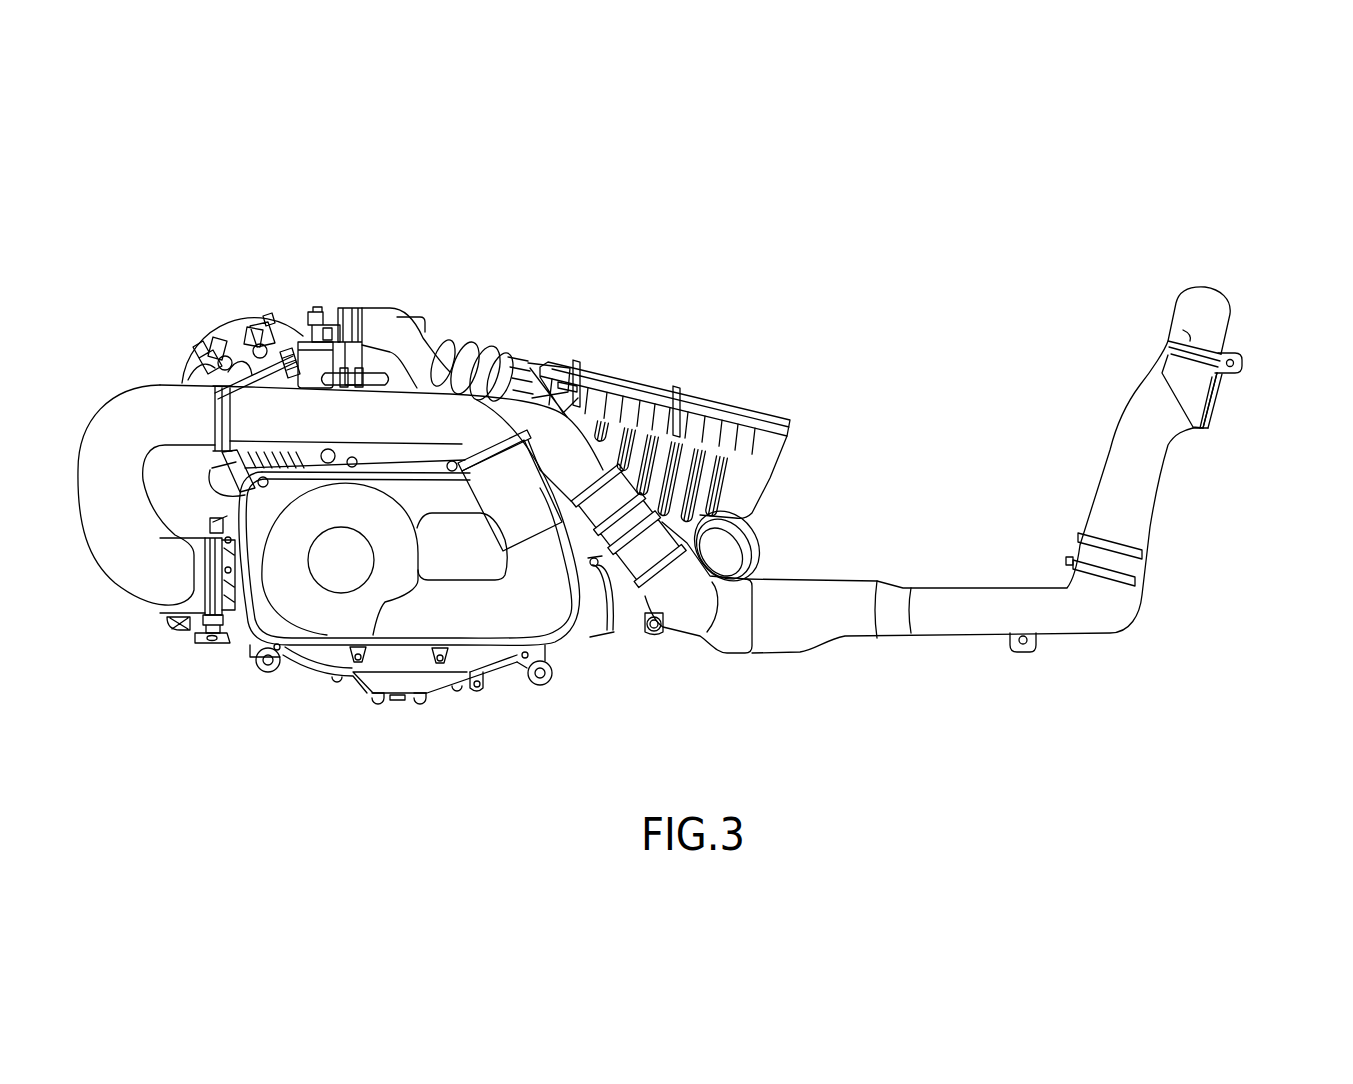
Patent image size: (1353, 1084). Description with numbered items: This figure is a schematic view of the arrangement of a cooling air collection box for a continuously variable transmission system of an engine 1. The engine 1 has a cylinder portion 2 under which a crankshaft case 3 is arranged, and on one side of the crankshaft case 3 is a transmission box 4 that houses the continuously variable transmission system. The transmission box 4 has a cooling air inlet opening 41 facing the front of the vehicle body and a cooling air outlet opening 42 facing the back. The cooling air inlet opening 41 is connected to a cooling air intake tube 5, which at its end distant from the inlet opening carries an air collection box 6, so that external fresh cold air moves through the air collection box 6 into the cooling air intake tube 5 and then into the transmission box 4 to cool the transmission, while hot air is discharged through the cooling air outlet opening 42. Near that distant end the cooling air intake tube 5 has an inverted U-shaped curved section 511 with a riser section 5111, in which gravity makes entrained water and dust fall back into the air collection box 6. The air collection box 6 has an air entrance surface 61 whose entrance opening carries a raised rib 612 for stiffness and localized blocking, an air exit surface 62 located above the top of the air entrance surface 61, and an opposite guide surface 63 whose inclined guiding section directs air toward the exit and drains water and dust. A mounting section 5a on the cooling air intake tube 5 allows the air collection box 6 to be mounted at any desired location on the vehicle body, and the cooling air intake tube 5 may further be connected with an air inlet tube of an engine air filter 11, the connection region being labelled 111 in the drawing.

The engine 1 is at (190, 313).
The cylinder portion 2 is at (237, 335).
The crankshaft case 3 is at (407, 683).
The transmission box 4 is at (331, 607).
The cooling air inlet opening 41 is at (240, 607).
The cooling air outlet opening 42 is at (487, 450).
The cooling air intake tube 5 is at (981, 597).
The inverted U-shaped curved section 511 is at (1210, 288).
The riser section 5111 is at (1210, 330).
The mounting section 5a is at (1236, 358).
The air collection box 6 is at (1234, 414).
The air entrance surface 61 is at (1220, 384).
The raised rib 612 is at (1208, 426).
The air exit surface 62 is at (1188, 342).
The guide surface 63 is at (1173, 402).
The engine air filter 11 is at (710, 392).
The air cleaner outlet 111 is at (770, 563).